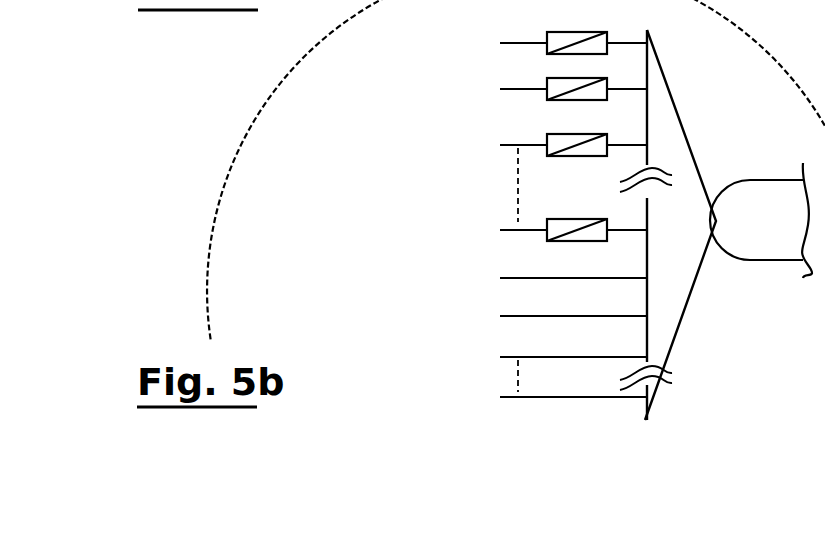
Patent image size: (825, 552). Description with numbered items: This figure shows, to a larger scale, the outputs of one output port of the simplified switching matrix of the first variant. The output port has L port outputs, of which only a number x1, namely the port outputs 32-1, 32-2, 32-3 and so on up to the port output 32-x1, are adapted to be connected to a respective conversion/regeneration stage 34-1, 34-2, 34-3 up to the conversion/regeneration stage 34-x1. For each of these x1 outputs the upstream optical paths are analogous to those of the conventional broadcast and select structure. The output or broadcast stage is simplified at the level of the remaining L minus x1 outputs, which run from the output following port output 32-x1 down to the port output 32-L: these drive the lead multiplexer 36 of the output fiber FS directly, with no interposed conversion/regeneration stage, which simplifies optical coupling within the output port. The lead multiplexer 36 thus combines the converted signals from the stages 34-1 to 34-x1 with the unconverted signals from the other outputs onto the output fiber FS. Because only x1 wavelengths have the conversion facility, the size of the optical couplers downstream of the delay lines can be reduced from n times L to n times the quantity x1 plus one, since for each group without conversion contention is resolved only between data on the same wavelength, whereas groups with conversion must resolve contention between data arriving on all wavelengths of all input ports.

The port output 32-1 is at (513, 38).
The port output 32-2 is at (513, 84).
The port output 32-3 is at (513, 140).
The port output 32-x1 is at (513, 224).
The port output 32-L is at (513, 393).
The conversion/regeneration stage 34-1 is at (592, 30).
The conversion/regeneration stage 34-2 is at (592, 77).
The conversion/regeneration stage 34-3 is at (592, 132).
The conversion/regeneration stage 34-x1 is at (590, 216).
The lead multiplexer 36 is at (697, 133).
The output fiber FS is at (768, 267).